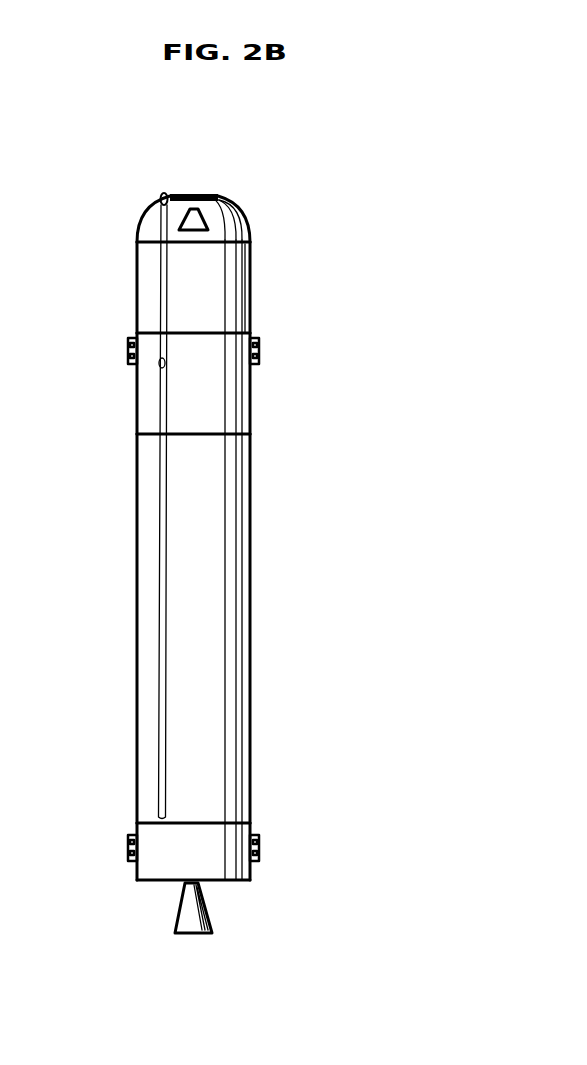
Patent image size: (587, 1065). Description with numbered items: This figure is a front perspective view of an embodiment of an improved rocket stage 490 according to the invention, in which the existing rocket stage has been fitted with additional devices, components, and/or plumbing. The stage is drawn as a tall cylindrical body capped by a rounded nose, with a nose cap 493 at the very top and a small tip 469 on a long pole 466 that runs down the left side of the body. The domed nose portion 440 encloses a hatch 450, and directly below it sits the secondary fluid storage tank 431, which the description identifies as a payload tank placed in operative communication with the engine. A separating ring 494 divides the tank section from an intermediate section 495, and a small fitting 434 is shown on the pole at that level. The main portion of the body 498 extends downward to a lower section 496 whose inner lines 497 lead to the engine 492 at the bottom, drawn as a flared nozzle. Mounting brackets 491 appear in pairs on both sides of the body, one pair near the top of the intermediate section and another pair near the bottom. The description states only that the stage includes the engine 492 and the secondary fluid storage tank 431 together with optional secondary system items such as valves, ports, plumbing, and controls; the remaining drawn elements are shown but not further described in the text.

The rocket assembly 490 is at (128, 146).
The nose cap 493 is at (170, 190).
The pole tip 469 is at (158, 199).
The nose dome 440 is at (140, 232).
The payload hatch 450 is at (208, 216).
The secondary fluid storage tank 431 is at (210, 280).
The separation ring 494 is at (133, 333).
The mounting brackets 491 is at (128, 350).
The pole fitting 434 is at (158, 365).
The intermediate section 495 is at (213, 385).
The pole 466 is at (157, 568).
The main tank body 498 is at (215, 602).
The lower section 496 is at (137, 878).
The lower section lines 497 is at (215, 866).
The engine 492 is at (213, 918).